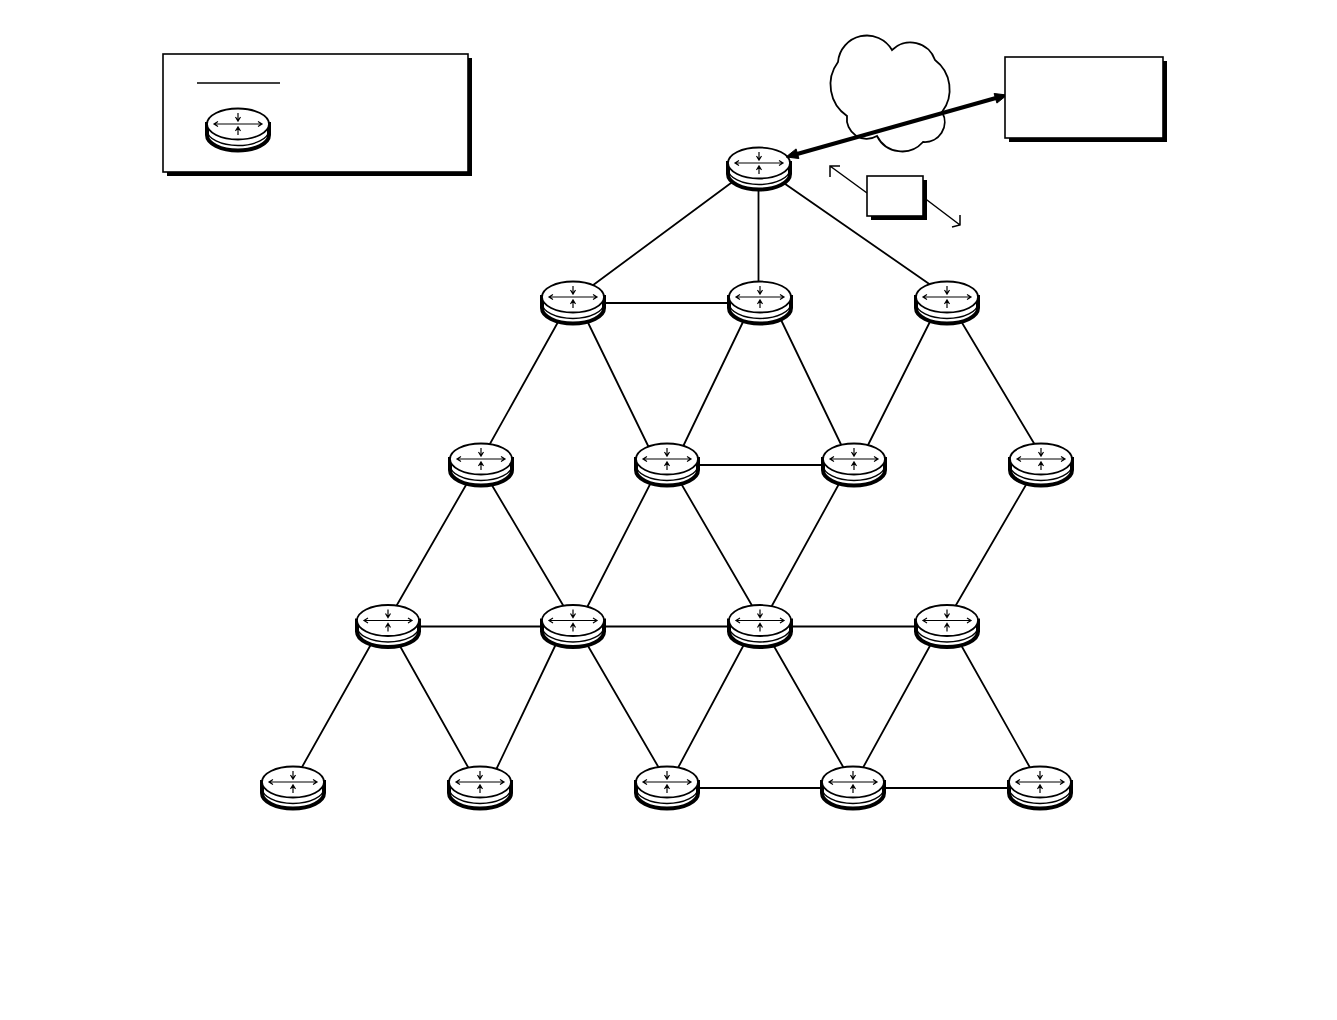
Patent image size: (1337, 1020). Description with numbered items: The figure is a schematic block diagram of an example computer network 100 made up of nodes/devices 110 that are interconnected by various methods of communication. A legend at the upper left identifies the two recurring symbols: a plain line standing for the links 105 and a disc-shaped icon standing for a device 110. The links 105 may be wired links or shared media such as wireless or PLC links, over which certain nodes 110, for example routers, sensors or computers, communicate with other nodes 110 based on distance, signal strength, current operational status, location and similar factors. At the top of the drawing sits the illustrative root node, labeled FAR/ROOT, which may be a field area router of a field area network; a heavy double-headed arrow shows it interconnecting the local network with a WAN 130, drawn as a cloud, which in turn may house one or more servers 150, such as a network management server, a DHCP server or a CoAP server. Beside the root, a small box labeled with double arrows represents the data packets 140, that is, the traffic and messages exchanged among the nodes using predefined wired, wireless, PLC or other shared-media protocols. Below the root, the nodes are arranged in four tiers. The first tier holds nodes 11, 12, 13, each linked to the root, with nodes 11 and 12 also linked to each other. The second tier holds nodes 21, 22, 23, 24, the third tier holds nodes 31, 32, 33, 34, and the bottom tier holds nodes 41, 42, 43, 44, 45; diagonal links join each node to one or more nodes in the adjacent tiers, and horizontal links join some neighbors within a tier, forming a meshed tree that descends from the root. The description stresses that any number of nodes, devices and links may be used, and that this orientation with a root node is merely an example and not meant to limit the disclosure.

The computer network 100 is at (1266, 107).
The links 105 is at (620, 429).
The nodes/devices 110 is at (322, 130).
The WAN 130 is at (870, 113).
The data packets 140 is at (910, 208).
The servers 150 is at (1100, 122).
The node/device 11 is at (573, 321).
The node/device 12 is at (760, 321).
The node/device 13 is at (947, 321).
The node/device 21 is at (481, 483).
The node/device 22 is at (667, 483).
The node/device 23 is at (854, 483).
The node/device 24 is at (1041, 483).
The node/device 31 is at (388, 644).
The node/device 32 is at (573, 644).
The node/device 33 is at (760, 644).
The node/device 34 is at (947, 644).
The node/device 41 is at (293, 806).
The node/device 42 is at (480, 806).
The node/device 43 is at (667, 806).
The node/device 44 is at (853, 806).
The node/device 45 is at (1040, 806).